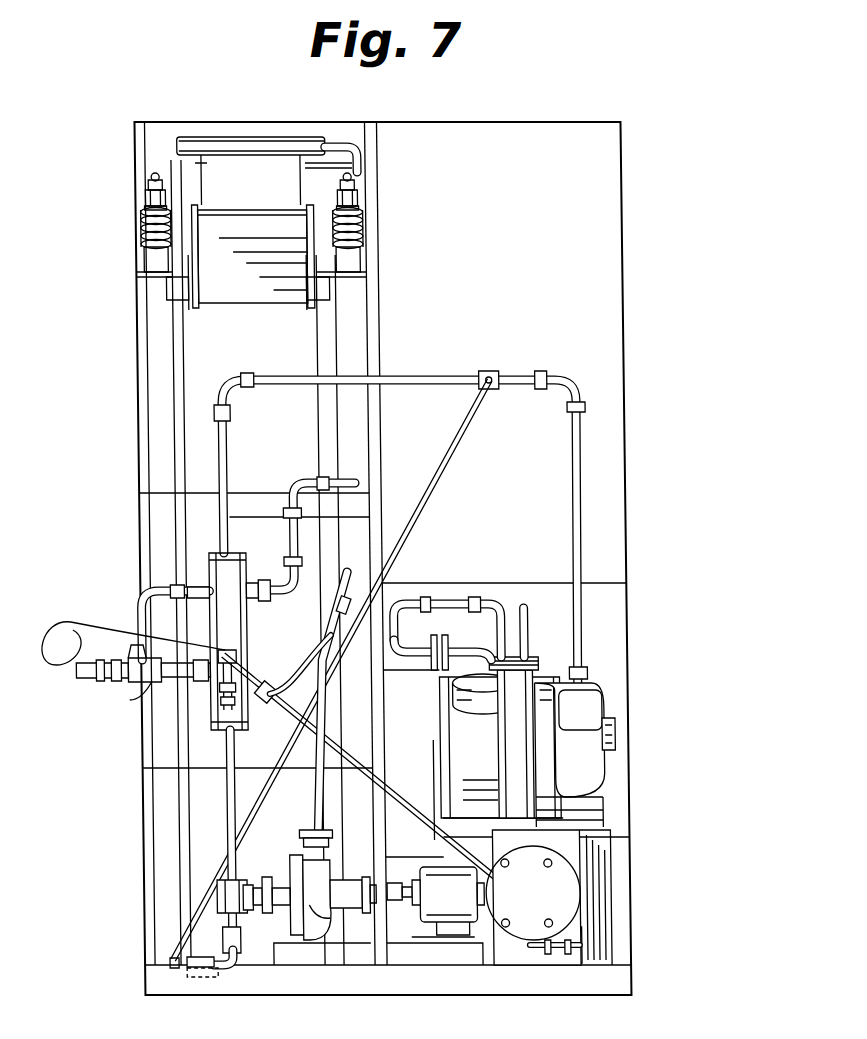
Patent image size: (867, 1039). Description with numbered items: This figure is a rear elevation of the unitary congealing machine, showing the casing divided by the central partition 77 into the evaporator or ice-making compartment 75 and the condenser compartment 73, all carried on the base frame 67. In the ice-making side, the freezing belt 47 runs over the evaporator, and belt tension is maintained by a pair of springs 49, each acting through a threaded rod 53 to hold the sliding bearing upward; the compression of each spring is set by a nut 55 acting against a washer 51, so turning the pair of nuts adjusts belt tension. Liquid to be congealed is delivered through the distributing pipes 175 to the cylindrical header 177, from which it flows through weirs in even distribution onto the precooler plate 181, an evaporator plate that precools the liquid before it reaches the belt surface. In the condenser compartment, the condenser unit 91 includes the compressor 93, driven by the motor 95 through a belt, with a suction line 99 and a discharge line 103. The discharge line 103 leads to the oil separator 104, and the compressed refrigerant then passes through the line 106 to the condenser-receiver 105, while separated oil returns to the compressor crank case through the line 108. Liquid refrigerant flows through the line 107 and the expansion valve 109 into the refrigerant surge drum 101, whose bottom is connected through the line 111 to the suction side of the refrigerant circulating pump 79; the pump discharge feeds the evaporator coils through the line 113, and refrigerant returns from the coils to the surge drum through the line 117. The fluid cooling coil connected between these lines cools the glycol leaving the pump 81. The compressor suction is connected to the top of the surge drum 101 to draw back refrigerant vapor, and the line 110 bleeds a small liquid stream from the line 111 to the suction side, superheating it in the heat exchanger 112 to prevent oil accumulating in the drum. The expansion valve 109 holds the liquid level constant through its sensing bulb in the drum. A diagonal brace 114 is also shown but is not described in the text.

The belt 47 is at (260, 210).
The springs 49 is at (150, 232).
The washer 51 is at (152, 210).
The threaded rod 53 is at (153, 182).
The nut 55 is at (150, 200).
The base frame 67 is at (345, 995).
The condenser section or compartment 73 is at (511, 143).
The evaporator or ice-making section of compartment 75 is at (349, 141).
The central partition 77 is at (376, 140).
The refrigerant circulating pump 79 is at (323, 900).
The pump 81 is at (445, 905).
The condenser unit 91 is at (608, 702).
The compressor 93 is at (486, 718).
The motor 95 is at (613, 750).
The refrigerant inlet or suction line 99 is at (284, 378).
The refrigerant surge drum 101 is at (240, 553).
The discharge line 103 is at (452, 604).
The oil separator 104 is at (500, 770).
The condenser-receiver 105 is at (555, 890).
The line 106 is at (530, 612).
The line 107 is at (392, 800).
The line 108 is at (150, 699).
The expansion valve 109 is at (235, 654).
The line 110 is at (232, 963).
The line 111 is at (233, 741).
The heat exchanger 112 is at (199, 977).
The line 113 is at (312, 786).
The brace 114 is at (475, 425).
The line 117 is at (282, 595).
The distributing pipes 175 is at (366, 348).
The cylindrical header 177 is at (256, 137).
The forecooler or precooler plate 181 is at (222, 170).